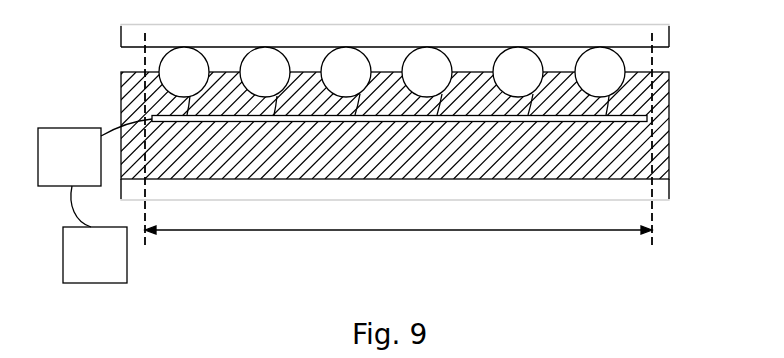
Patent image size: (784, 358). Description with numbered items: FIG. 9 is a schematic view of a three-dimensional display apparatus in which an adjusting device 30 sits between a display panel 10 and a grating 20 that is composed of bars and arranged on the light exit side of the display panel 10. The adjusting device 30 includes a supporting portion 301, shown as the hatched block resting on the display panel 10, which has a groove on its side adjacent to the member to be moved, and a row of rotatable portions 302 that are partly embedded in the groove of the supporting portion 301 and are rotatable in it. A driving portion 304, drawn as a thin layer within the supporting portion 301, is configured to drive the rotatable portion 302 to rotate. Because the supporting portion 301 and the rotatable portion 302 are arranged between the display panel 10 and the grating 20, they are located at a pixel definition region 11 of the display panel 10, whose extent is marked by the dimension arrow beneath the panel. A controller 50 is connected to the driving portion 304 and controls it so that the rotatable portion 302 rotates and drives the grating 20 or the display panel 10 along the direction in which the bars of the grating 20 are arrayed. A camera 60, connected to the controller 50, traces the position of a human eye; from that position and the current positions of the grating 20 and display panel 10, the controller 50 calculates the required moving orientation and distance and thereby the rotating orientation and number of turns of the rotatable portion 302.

The display panel 10 is at (671, 188).
The grating 20 is at (671, 34).
The adjusting device 30 is at (391, 113).
The supporting portion 301 is at (657, 163).
The rotatable portion 302 is at (600, 72).
The driving portion 304 is at (633, 118).
The pixel definition region 11 is at (398, 140).
The controller 50 is at (52, 177).
The camera 60 is at (116, 262).